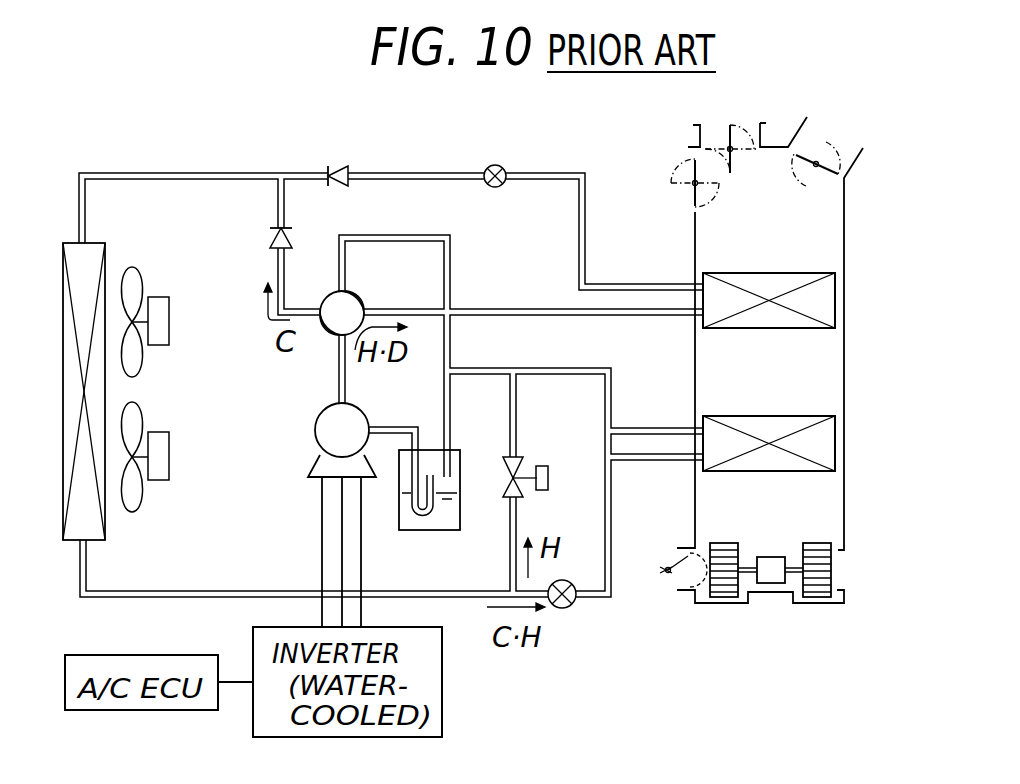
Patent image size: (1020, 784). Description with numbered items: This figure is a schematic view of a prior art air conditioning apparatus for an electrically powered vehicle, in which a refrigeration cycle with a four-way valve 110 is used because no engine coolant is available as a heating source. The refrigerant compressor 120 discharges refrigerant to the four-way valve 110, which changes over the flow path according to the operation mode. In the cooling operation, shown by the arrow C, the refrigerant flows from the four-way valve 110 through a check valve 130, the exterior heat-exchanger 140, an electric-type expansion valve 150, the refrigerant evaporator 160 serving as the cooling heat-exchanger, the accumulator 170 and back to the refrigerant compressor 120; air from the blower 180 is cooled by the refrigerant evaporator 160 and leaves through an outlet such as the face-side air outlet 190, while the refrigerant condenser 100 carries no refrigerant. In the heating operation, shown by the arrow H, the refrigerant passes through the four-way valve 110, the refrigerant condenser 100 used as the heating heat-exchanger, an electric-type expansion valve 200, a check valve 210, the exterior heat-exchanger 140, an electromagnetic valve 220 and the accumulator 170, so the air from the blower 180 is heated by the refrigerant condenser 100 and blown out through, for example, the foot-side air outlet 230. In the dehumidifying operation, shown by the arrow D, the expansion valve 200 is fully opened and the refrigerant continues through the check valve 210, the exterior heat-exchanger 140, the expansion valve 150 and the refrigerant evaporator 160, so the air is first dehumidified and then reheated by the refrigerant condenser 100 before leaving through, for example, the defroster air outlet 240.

The refrigerant condenser 100 is at (838, 283).
The four-way valve 110 is at (320, 325).
The refrigerant compressor 120 is at (314, 428).
The check valve 130 is at (273, 237).
The exterior heat-exchanger 140 is at (90, 243).
The electric-type expansion valve 150 is at (574, 604).
The refrigerant evaporator 160 is at (838, 428).
The accumulator 170 is at (450, 530).
The blower 180 is at (817, 600).
The face-side air outlet 190 is at (722, 132).
The electric-type expansion valve 200 is at (500, 164).
The check valve 210 is at (350, 165).
The electromagnetic valve 220 is at (522, 457).
The foot-side air outlet 230 is at (815, 140).
The defroster air outlet 240 is at (695, 207).